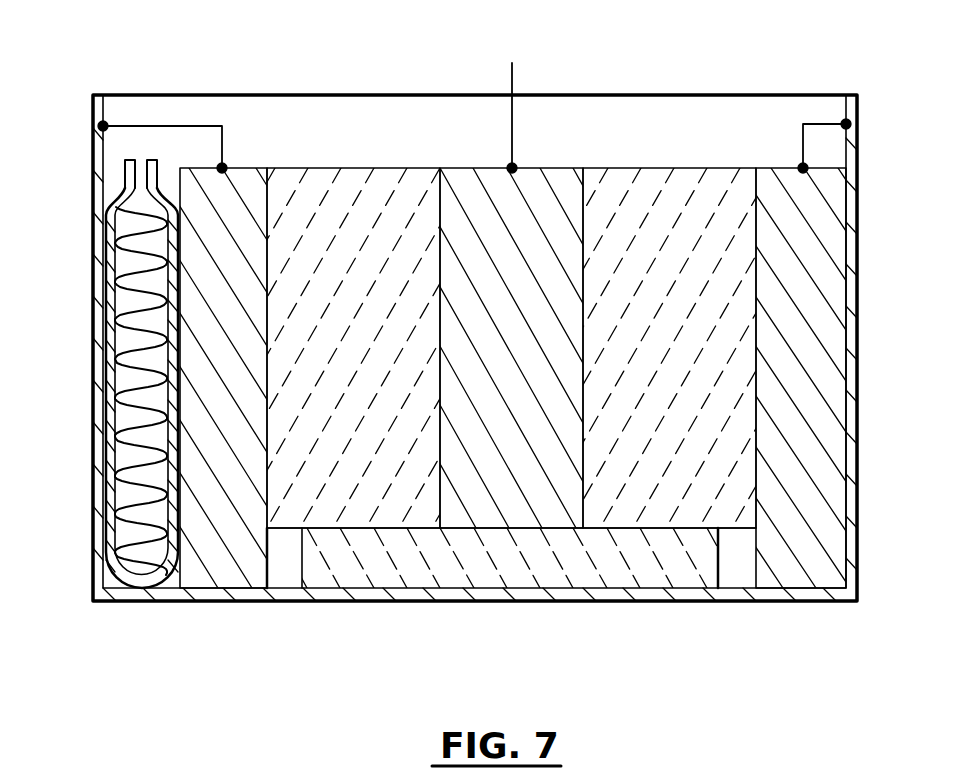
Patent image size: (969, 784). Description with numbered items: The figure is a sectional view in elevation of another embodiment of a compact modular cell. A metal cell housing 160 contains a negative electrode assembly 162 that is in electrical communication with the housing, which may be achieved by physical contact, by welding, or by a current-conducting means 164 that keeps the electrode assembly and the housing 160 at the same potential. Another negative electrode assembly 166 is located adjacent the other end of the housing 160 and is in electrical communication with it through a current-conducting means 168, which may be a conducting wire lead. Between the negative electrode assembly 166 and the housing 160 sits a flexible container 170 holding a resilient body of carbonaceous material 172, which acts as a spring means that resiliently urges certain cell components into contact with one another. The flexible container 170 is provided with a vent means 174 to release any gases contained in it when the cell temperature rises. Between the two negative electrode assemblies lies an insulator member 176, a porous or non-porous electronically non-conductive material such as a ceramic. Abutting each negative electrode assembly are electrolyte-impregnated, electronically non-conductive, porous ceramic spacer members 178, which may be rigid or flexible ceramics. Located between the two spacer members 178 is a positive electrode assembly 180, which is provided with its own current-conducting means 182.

The metal cell housing 160 is at (858, 205).
The negative electrode assembly 162 is at (785, 168).
The current-conducting means 164 is at (820, 123).
The negative electrode assembly 166 is at (240, 168).
The current-conducting means 168 is at (155, 125).
The flexible container 170 is at (118, 578).
The resilient body of carbonaceous material 172 is at (105, 415).
The vent means 174 is at (123, 163).
The insulator member 176 is at (545, 568).
The porous ceramic spacer member 178 is at (332, 168).
The positive electrode assembly 180 is at (557, 168).
The current-conducting means 182 is at (512, 63).